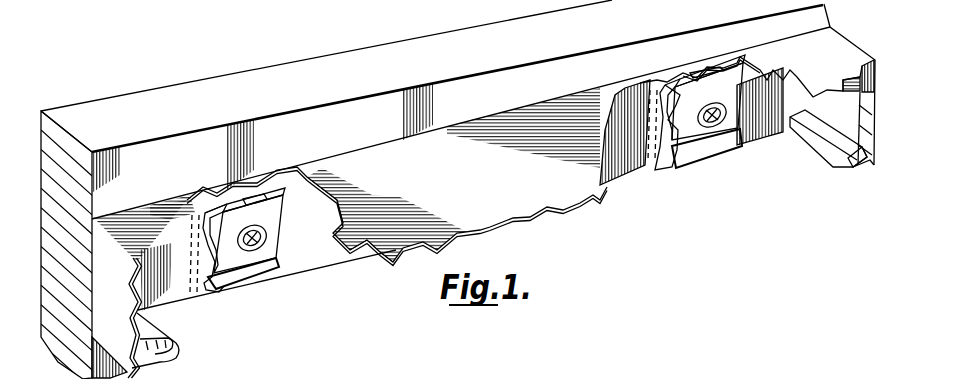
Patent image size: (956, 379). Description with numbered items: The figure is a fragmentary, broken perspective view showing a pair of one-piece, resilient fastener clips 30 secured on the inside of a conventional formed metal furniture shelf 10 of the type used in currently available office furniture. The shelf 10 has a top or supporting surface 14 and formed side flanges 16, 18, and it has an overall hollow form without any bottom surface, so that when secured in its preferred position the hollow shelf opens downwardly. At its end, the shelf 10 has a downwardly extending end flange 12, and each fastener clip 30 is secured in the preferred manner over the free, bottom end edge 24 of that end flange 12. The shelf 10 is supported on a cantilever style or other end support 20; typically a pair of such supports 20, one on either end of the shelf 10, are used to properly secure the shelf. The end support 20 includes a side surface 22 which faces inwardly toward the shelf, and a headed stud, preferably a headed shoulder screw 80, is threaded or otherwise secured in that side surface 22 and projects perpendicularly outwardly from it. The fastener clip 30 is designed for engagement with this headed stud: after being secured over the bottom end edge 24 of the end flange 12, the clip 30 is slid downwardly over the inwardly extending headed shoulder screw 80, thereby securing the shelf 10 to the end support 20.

The metal furniture shelf 10 is at (499, 110).
The end flange 12 is at (333, 236).
The top or supporting surface 14 is at (504, 183).
The side flange 16 is at (120, 316).
The side flange 18 is at (836, 114).
The end support 20 is at (174, 112).
The side surface 22 is at (376, 134).
The bottom end edge 24 is at (294, 270).
The fastener clip 30 is at (287, 241).
The headed shoulder screw 80 is at (266, 236).